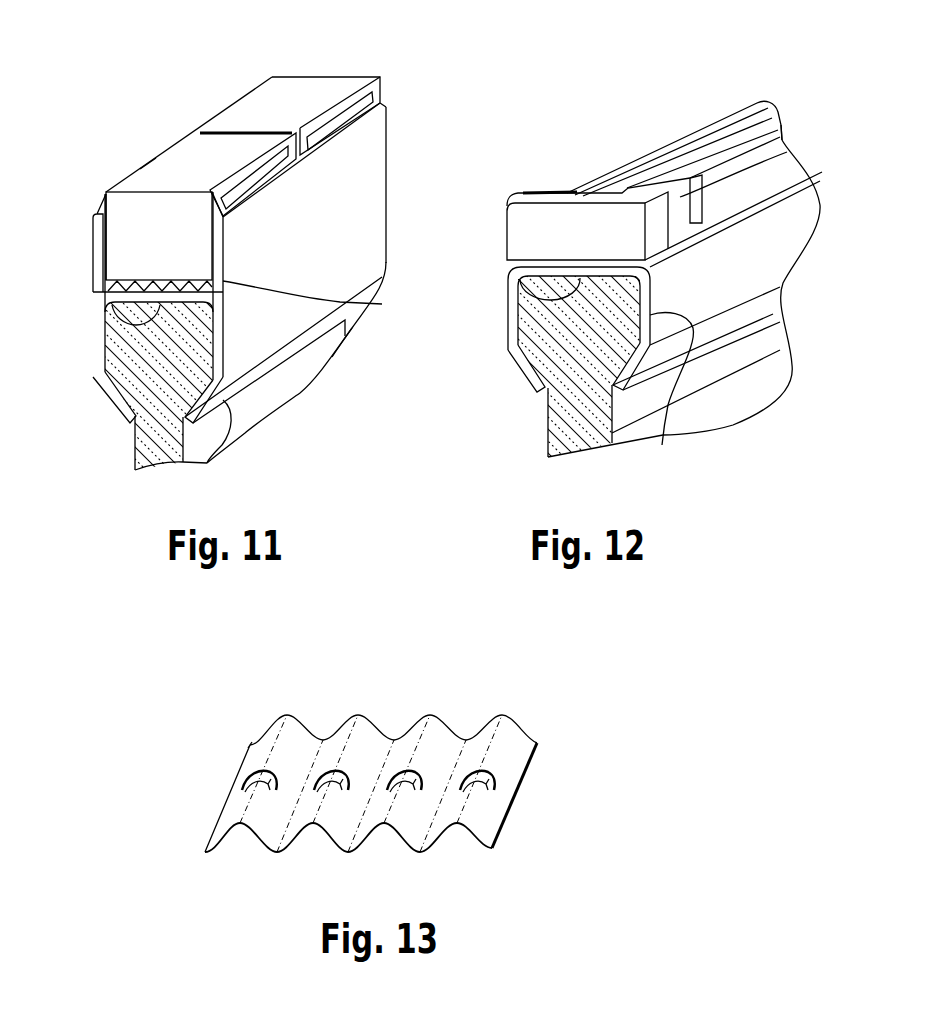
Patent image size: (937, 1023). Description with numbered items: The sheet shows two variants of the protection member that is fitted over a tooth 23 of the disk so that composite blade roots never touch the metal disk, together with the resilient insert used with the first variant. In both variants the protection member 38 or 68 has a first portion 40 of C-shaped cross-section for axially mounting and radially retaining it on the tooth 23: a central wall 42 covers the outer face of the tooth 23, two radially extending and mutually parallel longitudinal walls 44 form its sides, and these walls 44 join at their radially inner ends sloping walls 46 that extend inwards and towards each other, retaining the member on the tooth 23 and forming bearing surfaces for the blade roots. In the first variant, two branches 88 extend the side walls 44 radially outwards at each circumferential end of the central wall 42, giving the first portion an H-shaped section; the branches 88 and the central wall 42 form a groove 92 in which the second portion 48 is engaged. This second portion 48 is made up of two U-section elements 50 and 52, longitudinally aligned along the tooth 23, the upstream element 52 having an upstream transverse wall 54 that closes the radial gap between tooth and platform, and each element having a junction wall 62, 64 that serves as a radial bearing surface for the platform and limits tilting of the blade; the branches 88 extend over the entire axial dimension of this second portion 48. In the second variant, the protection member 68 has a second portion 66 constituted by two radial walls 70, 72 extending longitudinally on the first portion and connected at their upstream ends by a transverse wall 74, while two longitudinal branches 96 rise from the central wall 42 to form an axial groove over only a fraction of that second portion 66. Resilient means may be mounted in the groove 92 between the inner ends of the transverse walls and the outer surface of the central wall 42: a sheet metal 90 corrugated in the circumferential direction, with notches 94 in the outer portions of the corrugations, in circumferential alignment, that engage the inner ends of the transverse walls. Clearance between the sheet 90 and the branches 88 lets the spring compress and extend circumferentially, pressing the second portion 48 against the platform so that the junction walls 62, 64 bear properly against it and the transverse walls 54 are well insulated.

In FIG. 11, the tooth 23 is at (122, 356).
In FIG. 12, the tooth 23 is at (537, 310).
In FIG. 11, the protection member 38 is at (341, 345).
In FIG. 11, the first portion 40 is at (262, 371).
In FIG. 12, the first portion 40 is at (804, 259).
In FIG. 11, the central wall 42 is at (132, 310).
In FIG. 12, the central wall 42 is at (515, 274).
In FIG. 11, the longitudinal walls 44 is at (93, 341).
In FIG. 12, the longitudinal walls 44 is at (517, 325).
In FIG. 11, the sloping walls 46 is at (112, 402).
In FIG. 12, the sloping walls 46 is at (527, 372).
In FIG. 11, the second portion 48 is at (197, 128).
In FIG. 11, the element 50 is at (306, 101).
In FIG. 11, the upstream element 52 is at (160, 150).
In FIG. 11, the upstream transverse wall 54 is at (121, 252).
In FIG. 11, the junction wall 62 is at (148, 163).
In FIG. 11, the junction wall 64 is at (257, 110).
In FIG. 12, the second portion 66 is at (636, 150).
In FIG. 12, the protection member 68 is at (800, 116).
In FIG. 12, the radial wall 70 is at (724, 128).
In FIG. 12, the radial wall 72 is at (787, 147).
In FIG. 12, the transverse wall 74 is at (538, 229).
In FIG. 11, the branches 88 is at (93, 227).
In FIG. 11, the sheet metal 90 is at (106, 289).
In FIG. 13, the sheet metal 90 is at (507, 757).
In FIG. 11, the groove 92 is at (372, 304).
In FIG. 13, the notches 94 is at (490, 780).
In FIG. 12, the longitudinal branches 96 is at (778, 175).